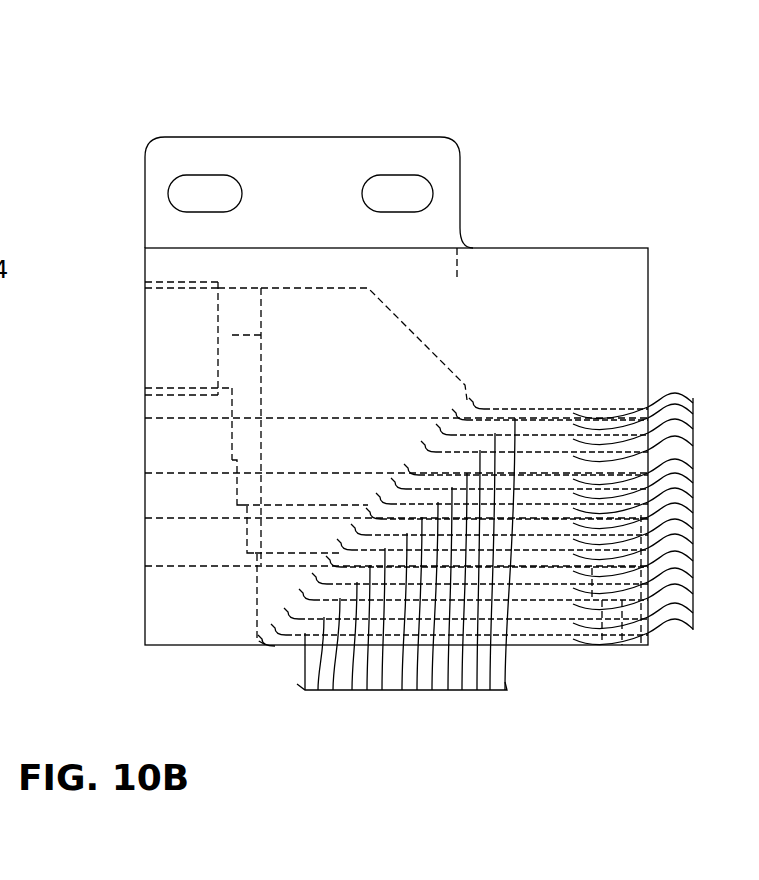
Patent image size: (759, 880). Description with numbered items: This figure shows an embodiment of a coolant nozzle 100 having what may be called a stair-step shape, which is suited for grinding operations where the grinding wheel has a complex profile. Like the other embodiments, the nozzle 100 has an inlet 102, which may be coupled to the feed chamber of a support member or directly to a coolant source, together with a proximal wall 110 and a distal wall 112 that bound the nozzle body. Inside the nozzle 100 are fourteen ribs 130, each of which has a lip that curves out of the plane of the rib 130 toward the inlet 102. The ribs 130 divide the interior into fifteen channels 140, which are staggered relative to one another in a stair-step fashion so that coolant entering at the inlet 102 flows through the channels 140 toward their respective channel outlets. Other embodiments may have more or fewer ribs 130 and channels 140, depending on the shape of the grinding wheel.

The nozzle 100 is at (141, 114).
The inlet 102 is at (118, 329).
The proximal wall 110 is at (478, 400).
The distal wall 112 is at (276, 648).
The ribs 130 is at (405, 692).
The channels 140 is at (727, 504).